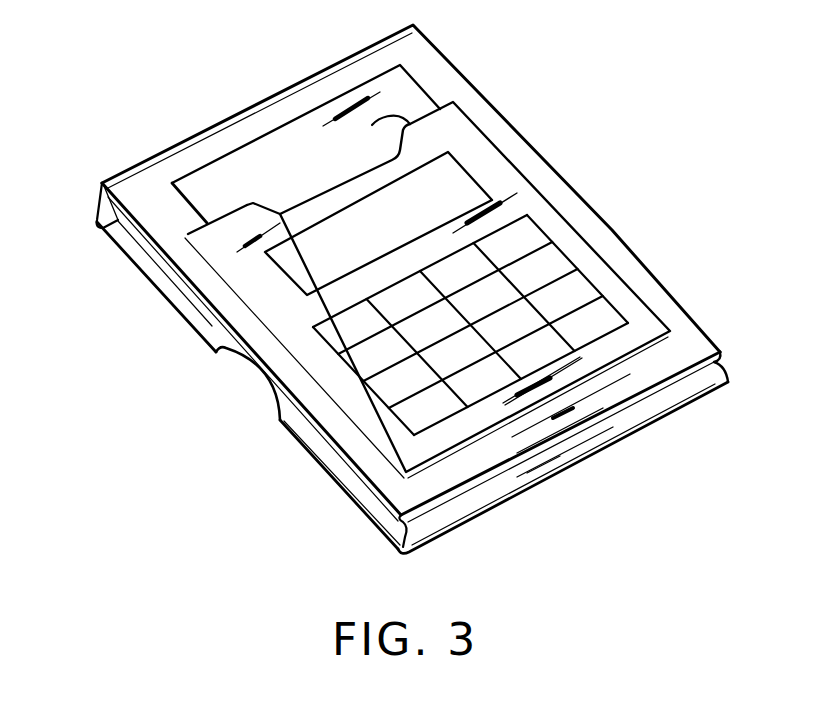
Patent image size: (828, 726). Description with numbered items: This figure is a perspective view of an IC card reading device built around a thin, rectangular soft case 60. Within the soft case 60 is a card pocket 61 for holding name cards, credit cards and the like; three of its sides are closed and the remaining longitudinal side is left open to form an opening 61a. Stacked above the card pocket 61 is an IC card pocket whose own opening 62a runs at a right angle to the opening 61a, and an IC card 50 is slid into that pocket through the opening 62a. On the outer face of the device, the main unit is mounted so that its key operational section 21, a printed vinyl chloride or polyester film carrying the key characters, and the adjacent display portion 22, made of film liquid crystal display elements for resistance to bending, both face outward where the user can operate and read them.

The key operational section 21 is at (530, 220).
The display portion 22 is at (371, 252).
The IC card 50 is at (281, 126).
The soft case 60 is at (483, 98).
The card pocket 61 is at (147, 255).
The opening 61a is at (231, 343).
The opening 62a is at (372, 125).